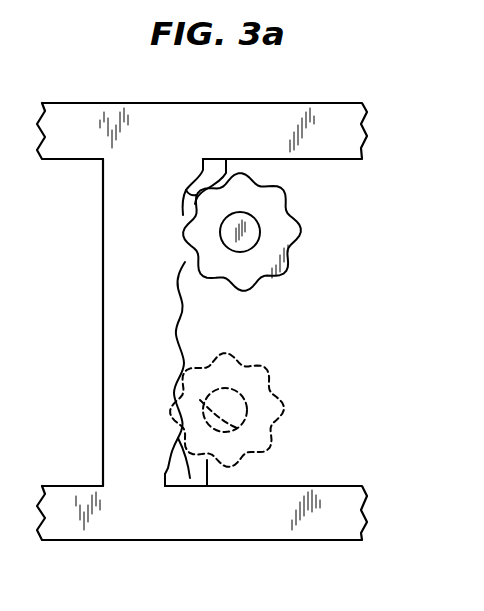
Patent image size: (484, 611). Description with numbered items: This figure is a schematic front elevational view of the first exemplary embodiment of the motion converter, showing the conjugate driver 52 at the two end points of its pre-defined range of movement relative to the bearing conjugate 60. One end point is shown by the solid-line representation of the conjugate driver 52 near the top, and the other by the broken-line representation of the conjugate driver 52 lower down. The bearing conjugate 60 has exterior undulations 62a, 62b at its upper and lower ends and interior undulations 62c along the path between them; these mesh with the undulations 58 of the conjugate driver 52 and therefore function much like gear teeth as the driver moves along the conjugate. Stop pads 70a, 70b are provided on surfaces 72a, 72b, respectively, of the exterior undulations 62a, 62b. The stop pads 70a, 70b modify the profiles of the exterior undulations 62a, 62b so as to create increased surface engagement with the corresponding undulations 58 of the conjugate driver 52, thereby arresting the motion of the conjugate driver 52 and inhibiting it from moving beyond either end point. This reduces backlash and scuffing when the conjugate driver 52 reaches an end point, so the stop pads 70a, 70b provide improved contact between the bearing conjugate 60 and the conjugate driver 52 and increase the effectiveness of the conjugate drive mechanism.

The conjugate driver 52 is at (277, 233).
The undulations 58 is at (190, 205).
The bearing conjugate 60 is at (122, 283).
The exterior undulation 62a is at (193, 186).
The exterior undulation 62b is at (172, 444).
The interior undulations 62c is at (188, 222).
The stop pad 70a is at (217, 167).
The stop pad 70b is at (184, 480).
The surface 72a is at (203, 170).
The surface 72b is at (160, 468).